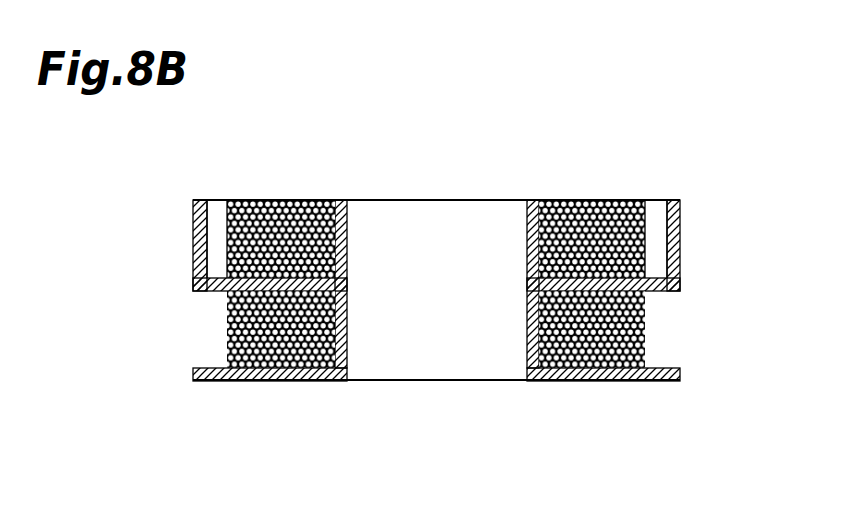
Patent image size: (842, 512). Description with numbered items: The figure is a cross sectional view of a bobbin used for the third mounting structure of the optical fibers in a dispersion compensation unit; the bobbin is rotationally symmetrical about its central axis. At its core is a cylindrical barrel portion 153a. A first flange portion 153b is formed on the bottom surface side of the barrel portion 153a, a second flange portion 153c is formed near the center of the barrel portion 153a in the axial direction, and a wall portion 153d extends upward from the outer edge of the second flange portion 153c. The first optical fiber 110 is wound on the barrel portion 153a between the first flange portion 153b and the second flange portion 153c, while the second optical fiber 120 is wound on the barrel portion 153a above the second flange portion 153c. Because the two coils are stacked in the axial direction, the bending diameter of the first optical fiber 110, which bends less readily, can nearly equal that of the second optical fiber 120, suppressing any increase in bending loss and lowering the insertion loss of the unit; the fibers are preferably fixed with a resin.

The second optical fiber 120 is at (263, 212).
The first optical fiber 110 is at (270, 360).
The barrel portion 153a is at (527, 350).
The first flange portion 153b is at (632, 382).
The second flange portion 153c is at (674, 291).
The wall portion 153d is at (680, 228).